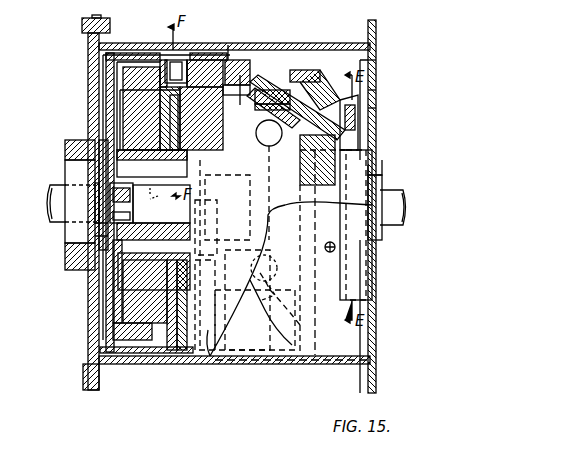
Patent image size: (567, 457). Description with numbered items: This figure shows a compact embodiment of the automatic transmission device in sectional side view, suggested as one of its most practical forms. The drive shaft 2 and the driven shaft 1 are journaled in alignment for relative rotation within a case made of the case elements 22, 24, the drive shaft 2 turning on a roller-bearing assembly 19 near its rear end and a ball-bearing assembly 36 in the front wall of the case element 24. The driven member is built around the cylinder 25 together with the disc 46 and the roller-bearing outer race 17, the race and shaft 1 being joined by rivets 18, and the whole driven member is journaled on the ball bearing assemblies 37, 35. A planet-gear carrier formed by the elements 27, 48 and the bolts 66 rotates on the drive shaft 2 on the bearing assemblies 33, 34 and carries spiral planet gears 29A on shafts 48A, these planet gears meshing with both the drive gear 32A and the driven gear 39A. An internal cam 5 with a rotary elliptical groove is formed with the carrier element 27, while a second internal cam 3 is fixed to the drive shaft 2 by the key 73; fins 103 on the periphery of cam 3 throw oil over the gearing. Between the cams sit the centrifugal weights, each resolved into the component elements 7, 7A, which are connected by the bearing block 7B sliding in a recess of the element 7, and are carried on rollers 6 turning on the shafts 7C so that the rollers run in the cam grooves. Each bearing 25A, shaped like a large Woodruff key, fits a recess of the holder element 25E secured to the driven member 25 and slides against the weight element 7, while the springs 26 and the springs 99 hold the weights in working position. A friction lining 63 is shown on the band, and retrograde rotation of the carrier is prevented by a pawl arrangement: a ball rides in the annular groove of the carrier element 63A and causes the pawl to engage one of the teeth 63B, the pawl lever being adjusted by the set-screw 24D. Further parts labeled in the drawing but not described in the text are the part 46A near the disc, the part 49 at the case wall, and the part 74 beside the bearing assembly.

The driven shaft 1 is at (50, 228).
The drive shaft 2 is at (392, 190).
The internal cam 3 is at (117, 76).
The internal cam 5 is at (245, 60).
The rollers 6 is at (123, 107).
The centrifugal weight 7 is at (88, 87).
The centrifugal weight component element 7A is at (240, 90).
The bearing block 7B is at (113, 130).
The roller shafts 7C is at (138, 120).
The roller-bearing outer race 17 is at (99, 228).
The rivets 18 is at (65, 152).
The roller-bearing assembly 19 is at (99, 195).
The case element 22 is at (88, 50).
The case element 24 is at (112, 46).
The set-screw 24D is at (376, 265).
The driven member cylinder 25 is at (145, 43).
The bearing block 25A is at (187, 62).
The holder element 25E is at (208, 55).
The spring 26 is at (120, 97).
The planet-gear carrier element 27 is at (283, 315).
The planet gears 29A is at (280, 80).
The drive gear 32A is at (266, 240).
The bearing assembly 33 is at (153, 219).
The bearing assembly 34 is at (342, 198).
The ball bearing assembly 35 is at (322, 245).
The ball-bearing assembly 36 is at (384, 178).
The ball bearing assembly 37 is at (65, 172).
The driven gear 39A is at (345, 100).
The disc 46 is at (272, 90).
The pinion hub 46A is at (300, 72).
The planet-gear carrier element 48 is at (296, 275).
The planet-gear shafts 48A is at (308, 268).
The cover fastener 49 is at (376, 60).
The friction lining 63 is at (376, 44).
The planet-gear carrier element 63A is at (376, 108).
The teeth 63B is at (376, 90).
The bolts 66 is at (222, 262).
The key 73 is at (122, 203).
The bearing race 74 is at (99, 210).
The springs 99 is at (153, 212).
The fins 103 is at (103, 62).